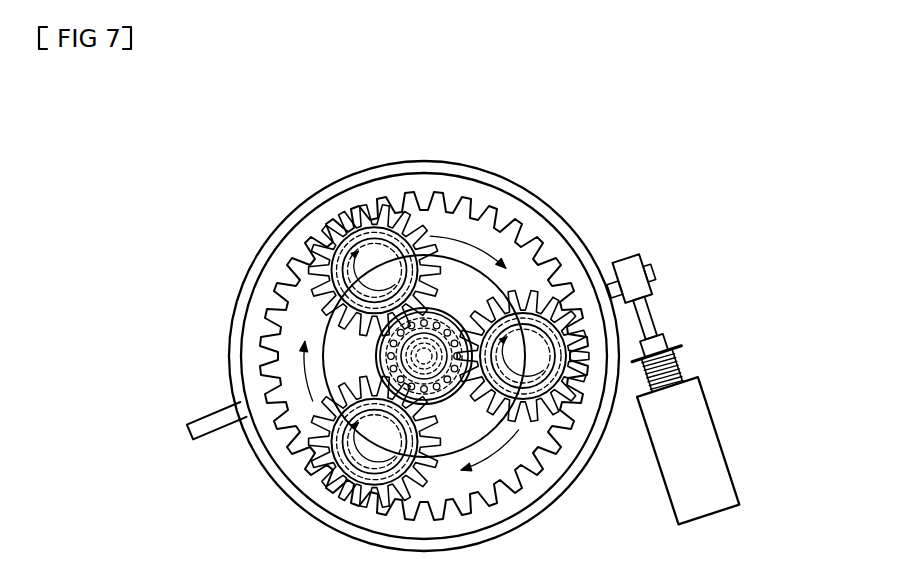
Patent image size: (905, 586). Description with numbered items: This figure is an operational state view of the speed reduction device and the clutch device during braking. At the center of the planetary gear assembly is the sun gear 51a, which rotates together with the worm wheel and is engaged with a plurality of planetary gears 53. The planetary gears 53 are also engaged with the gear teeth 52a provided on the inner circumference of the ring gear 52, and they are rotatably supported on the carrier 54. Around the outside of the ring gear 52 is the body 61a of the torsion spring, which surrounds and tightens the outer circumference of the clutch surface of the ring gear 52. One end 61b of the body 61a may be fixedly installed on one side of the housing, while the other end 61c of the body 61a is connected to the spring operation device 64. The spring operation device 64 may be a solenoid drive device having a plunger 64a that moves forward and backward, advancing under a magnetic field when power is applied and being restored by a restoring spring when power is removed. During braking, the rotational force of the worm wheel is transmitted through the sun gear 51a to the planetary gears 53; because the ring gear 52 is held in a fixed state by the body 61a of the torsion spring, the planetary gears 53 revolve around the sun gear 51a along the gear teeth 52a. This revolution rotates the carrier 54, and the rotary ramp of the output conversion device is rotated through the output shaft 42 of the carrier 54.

The output shaft 42 is at (317, 458).
The sun gear 51a is at (357, 350).
The ring gear 52 is at (541, 231).
The gear teeth 52a is at (468, 200).
The planetary gears 53 is at (343, 445).
The carrier 54 is at (325, 338).
The body of the torsion spring 61a is at (557, 496).
The one end of the body 61b is at (190, 433).
The other end of the body 61c is at (654, 264).
The spring operation device 64 is at (727, 431).
The plunger 64a is at (651, 315).